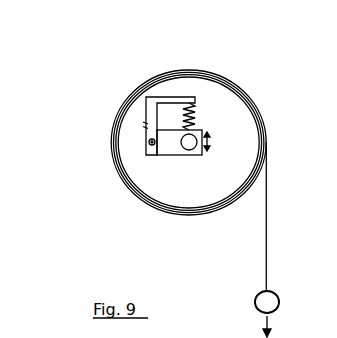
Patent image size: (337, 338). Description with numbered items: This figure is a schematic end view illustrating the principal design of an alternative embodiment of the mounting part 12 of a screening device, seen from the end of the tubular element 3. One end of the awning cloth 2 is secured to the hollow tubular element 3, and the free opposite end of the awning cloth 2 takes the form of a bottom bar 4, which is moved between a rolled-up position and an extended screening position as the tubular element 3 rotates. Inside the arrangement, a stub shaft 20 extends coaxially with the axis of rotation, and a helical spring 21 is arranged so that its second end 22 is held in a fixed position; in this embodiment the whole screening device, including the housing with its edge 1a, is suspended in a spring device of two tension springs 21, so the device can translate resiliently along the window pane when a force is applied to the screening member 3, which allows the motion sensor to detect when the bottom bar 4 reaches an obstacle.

The tubular element 3 is at (173, 71).
The second end 22 is at (193, 98).
The helical spring 21 is at (197, 123).
The stub shaft 20 is at (190, 150).
The edge 1a is at (149, 137).
The mounting part 12 is at (125, 128).
The awning cloth 2 is at (268, 207).
The bottom bar 4 is at (270, 301).